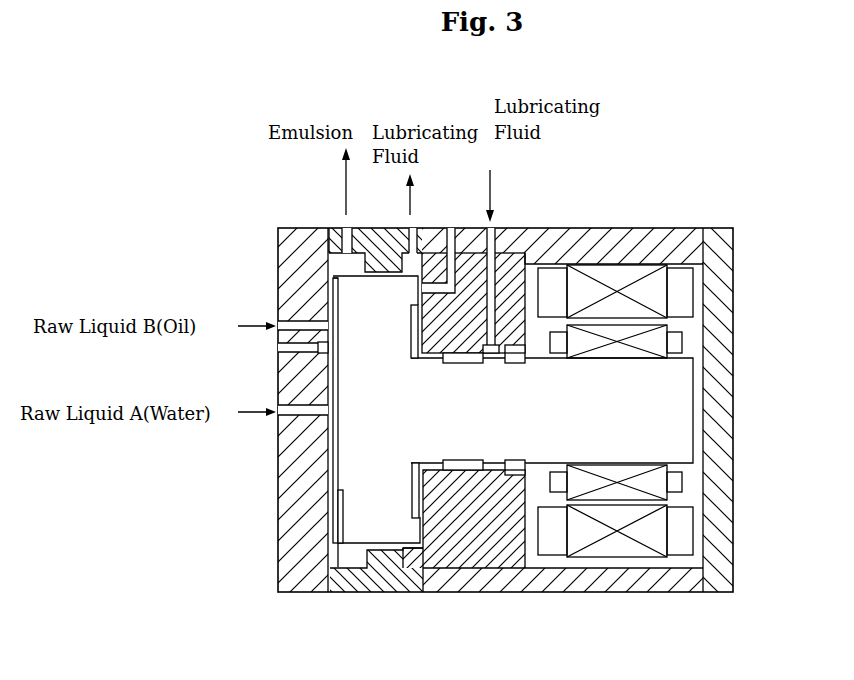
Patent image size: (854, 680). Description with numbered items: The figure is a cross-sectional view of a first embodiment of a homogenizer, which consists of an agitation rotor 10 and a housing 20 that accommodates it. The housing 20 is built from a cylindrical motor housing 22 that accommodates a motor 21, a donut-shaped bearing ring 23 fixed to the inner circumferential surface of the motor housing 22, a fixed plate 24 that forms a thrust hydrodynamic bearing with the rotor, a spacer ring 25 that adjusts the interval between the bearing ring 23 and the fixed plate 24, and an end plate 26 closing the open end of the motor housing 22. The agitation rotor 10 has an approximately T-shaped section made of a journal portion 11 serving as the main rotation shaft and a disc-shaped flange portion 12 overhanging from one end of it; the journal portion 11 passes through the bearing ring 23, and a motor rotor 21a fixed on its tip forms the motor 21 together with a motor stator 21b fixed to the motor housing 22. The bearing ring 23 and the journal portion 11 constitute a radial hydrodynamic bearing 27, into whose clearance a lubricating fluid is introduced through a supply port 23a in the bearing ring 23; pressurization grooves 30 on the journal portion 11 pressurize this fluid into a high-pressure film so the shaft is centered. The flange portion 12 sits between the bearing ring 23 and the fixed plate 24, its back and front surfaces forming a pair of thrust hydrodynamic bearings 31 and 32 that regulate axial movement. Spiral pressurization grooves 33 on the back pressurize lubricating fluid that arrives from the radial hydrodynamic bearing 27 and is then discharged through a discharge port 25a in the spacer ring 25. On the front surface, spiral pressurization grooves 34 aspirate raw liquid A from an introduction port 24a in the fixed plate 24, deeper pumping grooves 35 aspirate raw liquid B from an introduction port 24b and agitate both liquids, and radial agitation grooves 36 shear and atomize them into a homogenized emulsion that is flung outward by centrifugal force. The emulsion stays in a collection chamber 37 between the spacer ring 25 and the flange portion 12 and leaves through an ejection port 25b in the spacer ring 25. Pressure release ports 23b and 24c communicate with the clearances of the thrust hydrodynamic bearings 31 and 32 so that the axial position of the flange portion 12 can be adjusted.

The agitation rotor 10 is at (353, 476).
The journal portion 11 is at (650, 389).
The flange portion 12 is at (406, 565).
The housing 20 is at (606, 227).
The motor 21 is at (677, 411).
The motor rotor 21a is at (677, 342).
The motor stator 21b is at (683, 295).
The motor housing 22 is at (588, 578).
The bearing ring 23 is at (489, 522).
The supply port 23a is at (493, 227).
The pressure release port 23b is at (450, 227).
The fixed plate 24 is at (278, 581).
The introduction port for raw liquid A 24a is at (277, 389).
The introduction port for raw liquid B 24b is at (328, 309).
The pressure release port 24c is at (277, 347).
The spacer ring 25 is at (378, 580).
The discharge port 25a is at (411, 227).
The ejection port 25b is at (345, 227).
The end plate 26 is at (733, 500).
The radial hydrodynamic bearing 27 is at (472, 371).
The pressurization grooves 30 is at (462, 466).
The thrust hydrodynamic bearing 31 is at (410, 368).
The thrust hydrodynamic bearing 32 is at (343, 381).
The spiral pressurization grooves 33 is at (411, 322).
The spiral pressurization grooves 34 is at (333, 446).
The pumping grooves 35 is at (328, 290).
The agitation grooves 36 is at (328, 257).
The collection chamber 37 is at (350, 552).